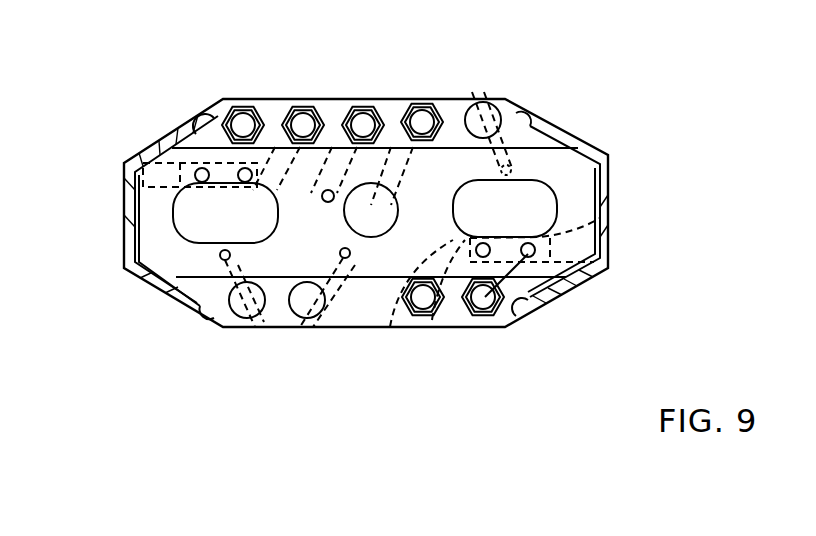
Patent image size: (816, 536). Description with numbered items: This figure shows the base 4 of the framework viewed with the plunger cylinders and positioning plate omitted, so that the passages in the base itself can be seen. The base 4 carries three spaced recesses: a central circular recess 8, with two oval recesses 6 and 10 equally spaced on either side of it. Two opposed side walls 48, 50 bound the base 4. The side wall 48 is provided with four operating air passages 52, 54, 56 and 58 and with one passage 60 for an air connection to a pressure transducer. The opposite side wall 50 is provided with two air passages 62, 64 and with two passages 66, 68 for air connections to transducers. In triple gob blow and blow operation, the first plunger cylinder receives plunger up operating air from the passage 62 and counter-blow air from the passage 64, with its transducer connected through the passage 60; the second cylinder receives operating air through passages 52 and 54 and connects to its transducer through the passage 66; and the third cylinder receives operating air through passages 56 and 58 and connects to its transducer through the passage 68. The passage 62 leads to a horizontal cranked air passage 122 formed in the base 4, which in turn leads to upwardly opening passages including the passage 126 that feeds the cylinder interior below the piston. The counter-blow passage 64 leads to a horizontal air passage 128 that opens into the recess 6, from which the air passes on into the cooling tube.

The base 4 is at (180, 258).
The recess 6 is at (543, 180).
The recess 8 is at (372, 228).
The recess 10 is at (190, 212).
The side wall 48 is at (340, 98).
The side wall 50 is at (345, 318).
The operating air passage 52 is at (365, 125).
The operating air passage 54 is at (423, 122).
The operating air passage 56 is at (243, 120).
The operating air passage 58 is at (303, 125).
The passage 60 is at (473, 100).
The air passage 62 is at (483, 297).
The air passage 64 is at (425, 297).
The passage 66 is at (292, 333).
The passage 68 is at (255, 333).
The horizontal cranked air passage 122 is at (608, 218).
The upwardly opening passage 126 is at (531, 255).
The horizontal air passage 128 is at (390, 333).